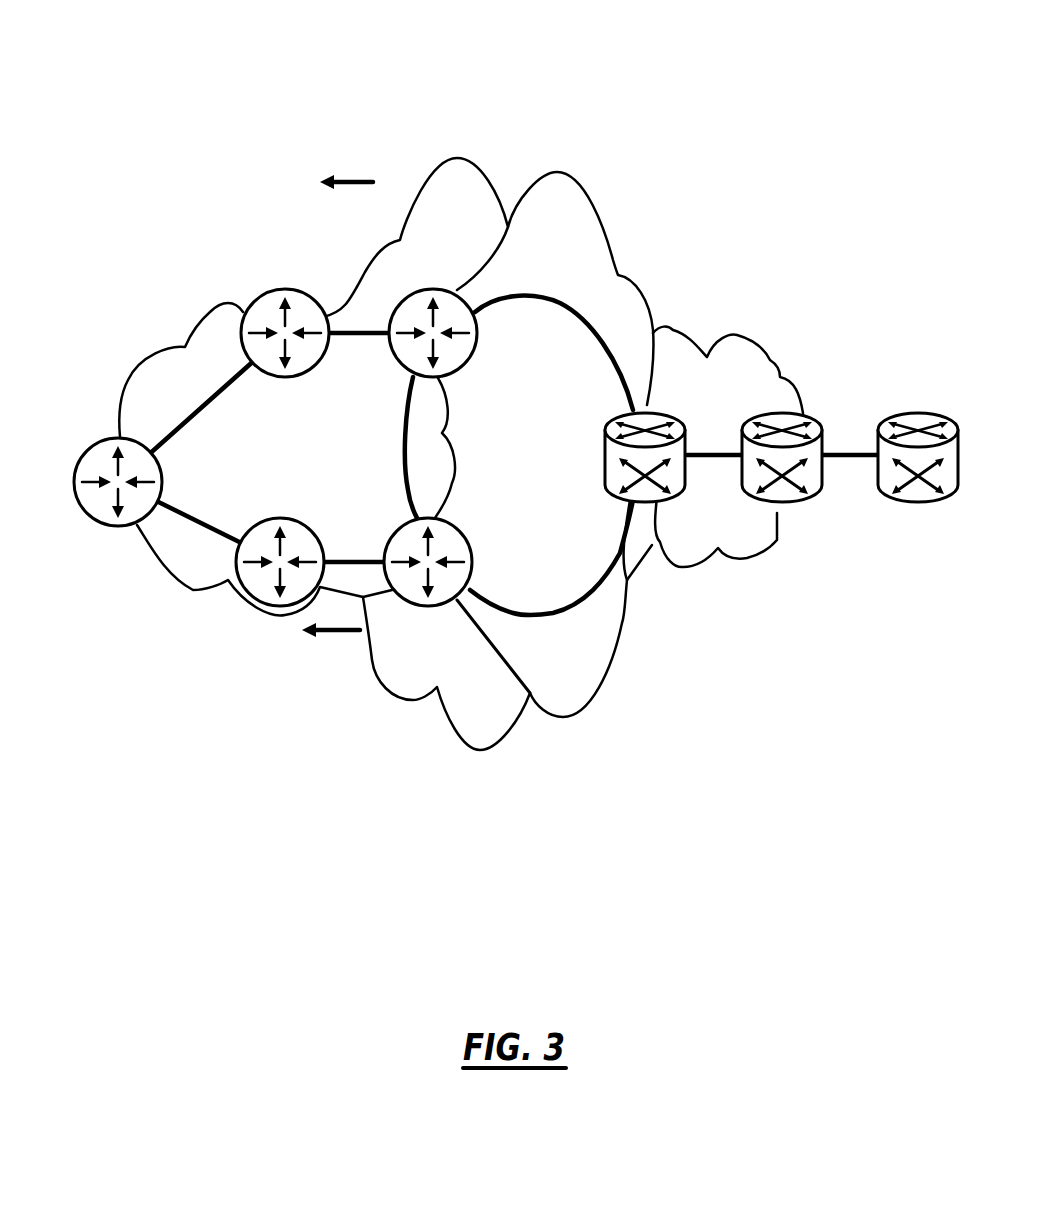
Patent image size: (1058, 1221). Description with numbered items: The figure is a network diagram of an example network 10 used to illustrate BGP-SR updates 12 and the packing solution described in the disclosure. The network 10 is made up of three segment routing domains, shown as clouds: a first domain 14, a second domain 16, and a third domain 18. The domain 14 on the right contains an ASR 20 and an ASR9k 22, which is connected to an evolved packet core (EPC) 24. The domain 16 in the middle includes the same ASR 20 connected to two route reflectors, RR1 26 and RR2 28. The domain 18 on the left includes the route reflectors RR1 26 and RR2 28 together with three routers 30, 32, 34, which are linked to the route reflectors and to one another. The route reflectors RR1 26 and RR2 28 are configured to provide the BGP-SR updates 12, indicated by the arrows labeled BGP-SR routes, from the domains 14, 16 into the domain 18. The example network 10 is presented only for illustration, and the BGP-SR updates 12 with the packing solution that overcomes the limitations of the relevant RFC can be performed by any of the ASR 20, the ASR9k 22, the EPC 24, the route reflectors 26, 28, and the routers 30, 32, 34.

The network 10 is at (547, 84).
The BGP-SR updates 12 is at (347, 155).
The SR domain 14 is at (721, 398).
The SR domain 16 is at (539, 465).
The SR domain 18 is at (323, 465).
The ASR 20 is at (665, 408).
The ASR9k 22 is at (803, 410).
The evolved packet core (EPC) 24 is at (873, 486).
The route reflector RR1 26 is at (490, 200).
The route reflector RR2 28 is at (530, 693).
The router 30 is at (97, 520).
The router 32 is at (237, 592).
The router 34 is at (270, 290).